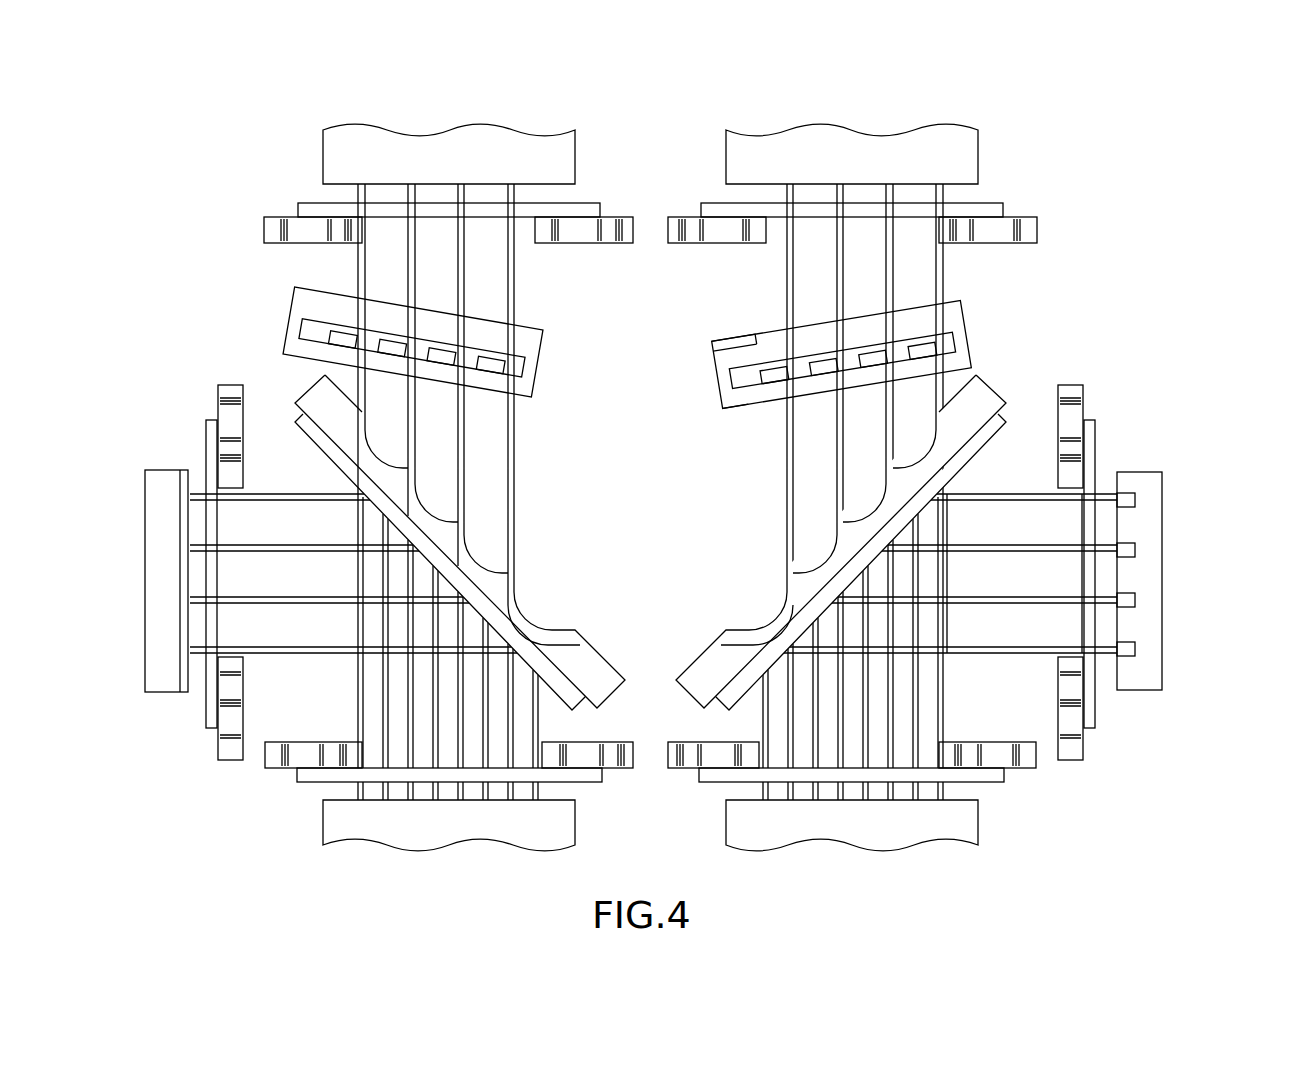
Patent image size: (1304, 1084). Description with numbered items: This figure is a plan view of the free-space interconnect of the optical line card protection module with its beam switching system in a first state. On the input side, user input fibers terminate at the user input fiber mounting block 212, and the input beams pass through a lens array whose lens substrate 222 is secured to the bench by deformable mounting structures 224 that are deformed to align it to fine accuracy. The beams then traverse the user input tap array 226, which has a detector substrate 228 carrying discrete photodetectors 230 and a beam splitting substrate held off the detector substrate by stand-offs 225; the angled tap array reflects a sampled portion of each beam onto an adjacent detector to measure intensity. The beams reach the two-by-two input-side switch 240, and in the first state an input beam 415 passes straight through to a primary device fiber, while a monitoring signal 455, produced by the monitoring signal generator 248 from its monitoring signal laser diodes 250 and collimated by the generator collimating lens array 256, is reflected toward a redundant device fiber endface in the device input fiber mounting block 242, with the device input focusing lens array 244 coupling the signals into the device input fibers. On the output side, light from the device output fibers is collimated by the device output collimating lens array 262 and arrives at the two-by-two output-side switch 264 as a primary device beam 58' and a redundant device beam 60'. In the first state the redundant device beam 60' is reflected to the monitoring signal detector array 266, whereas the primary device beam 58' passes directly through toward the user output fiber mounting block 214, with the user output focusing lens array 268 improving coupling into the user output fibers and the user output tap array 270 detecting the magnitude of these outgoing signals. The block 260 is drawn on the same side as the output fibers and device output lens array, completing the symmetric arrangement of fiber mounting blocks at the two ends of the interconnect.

The user output fiber mounting block 214 is at (450, 169).
The user input fiber mounting block 212 is at (853, 169).
The user output focusing lens array 268 is at (567, 203).
The lens substrate 222 is at (983, 204).
The deformable mounting structures 224 is at (1043, 218).
The input beam 415 is at (945, 262).
The photodetectors 230 is at (760, 345).
The detector substrate 228 is at (962, 312).
The user input tap array 226 is at (866, 352).
The stand-offs 225 is at (712, 390).
The input-side switch 240 is at (1000, 390).
The generator collimating lens array 256 is at (1098, 421).
The monitoring signal generator 248 is at (1143, 471).
The monitoring signal laser diodes 250 is at (1130, 497).
The monitoring signal 455 is at (972, 490).
The primary device beam 58' is at (493, 444).
The redundant device beam 60' is at (447, 648).
The output-side switch 264 is at (620, 663).
The user output tap array 270 is at (536, 368).
The monitoring signal detector array 266 is at (170, 470).
The device output collimating lens array 262 is at (297, 782).
The lower substrate / die 260 is at (452, 836).
The device input fiber mounting block 242 is at (853, 836).
The device input focusing lens array 244 is at (1005, 782).